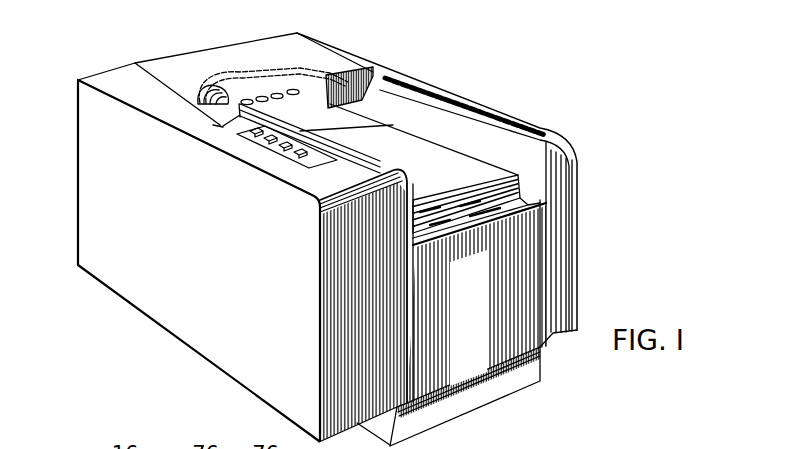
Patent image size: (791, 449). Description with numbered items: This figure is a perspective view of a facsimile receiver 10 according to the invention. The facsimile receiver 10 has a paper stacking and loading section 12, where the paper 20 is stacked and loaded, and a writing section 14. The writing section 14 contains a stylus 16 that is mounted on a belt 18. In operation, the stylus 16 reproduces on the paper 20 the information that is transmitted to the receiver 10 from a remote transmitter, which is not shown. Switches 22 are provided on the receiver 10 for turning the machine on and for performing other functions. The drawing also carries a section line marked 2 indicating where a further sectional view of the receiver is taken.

The section line 2- 2 is at (145, 51).
The cassette case housing 10 is at (559, 112).
The tape cassettes 12 is at (440, 156).
The latch block 14 is at (303, 75).
The contact terminals 16 is at (275, 92).
The connecting cable 18 is at (255, 100).
The cover plate 20 is at (350, 118).
The push buttons 22 is at (270, 156).